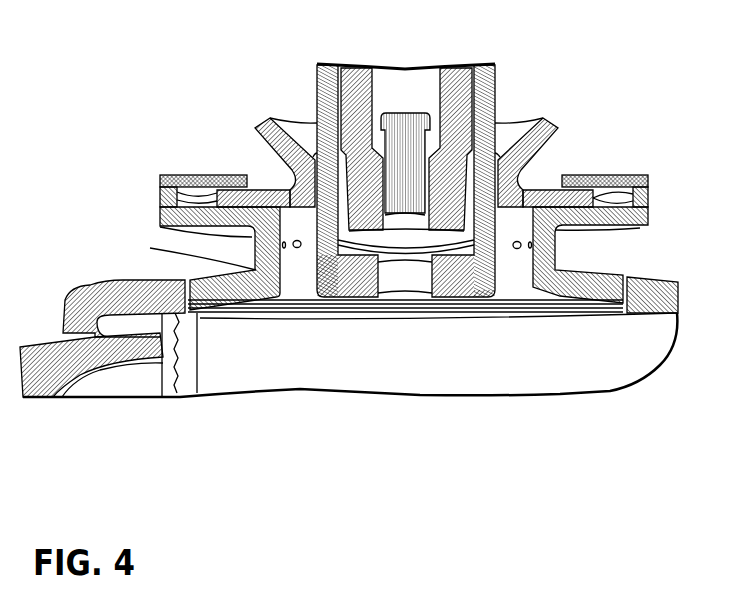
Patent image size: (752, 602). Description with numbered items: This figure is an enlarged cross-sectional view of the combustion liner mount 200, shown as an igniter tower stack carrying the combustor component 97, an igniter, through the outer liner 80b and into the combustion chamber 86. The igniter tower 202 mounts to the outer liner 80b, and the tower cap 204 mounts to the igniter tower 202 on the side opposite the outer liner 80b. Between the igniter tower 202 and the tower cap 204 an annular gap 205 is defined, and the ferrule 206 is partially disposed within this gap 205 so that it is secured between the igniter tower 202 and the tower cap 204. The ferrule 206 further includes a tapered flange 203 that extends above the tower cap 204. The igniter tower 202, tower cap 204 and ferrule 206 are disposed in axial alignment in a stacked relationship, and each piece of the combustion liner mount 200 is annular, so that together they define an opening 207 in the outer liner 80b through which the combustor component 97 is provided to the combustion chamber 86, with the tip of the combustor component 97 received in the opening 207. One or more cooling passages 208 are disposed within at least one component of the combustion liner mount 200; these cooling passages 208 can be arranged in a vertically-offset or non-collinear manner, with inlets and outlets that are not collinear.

The combustion liner mount 200 is at (252, 104).
The combustor component 97 is at (499, 83).
The tapered flange 203 is at (556, 120).
The ferrule 206 is at (530, 180).
The tower cap 204 is at (590, 174).
The annular gap 205 is at (650, 192).
The igniter tower 202 is at (556, 280).
The cooling passages 208 is at (163, 216).
The opening 207 is at (297, 264).
The combustion chamber 86 is at (464, 381).
The outer liner 80b is at (651, 310).